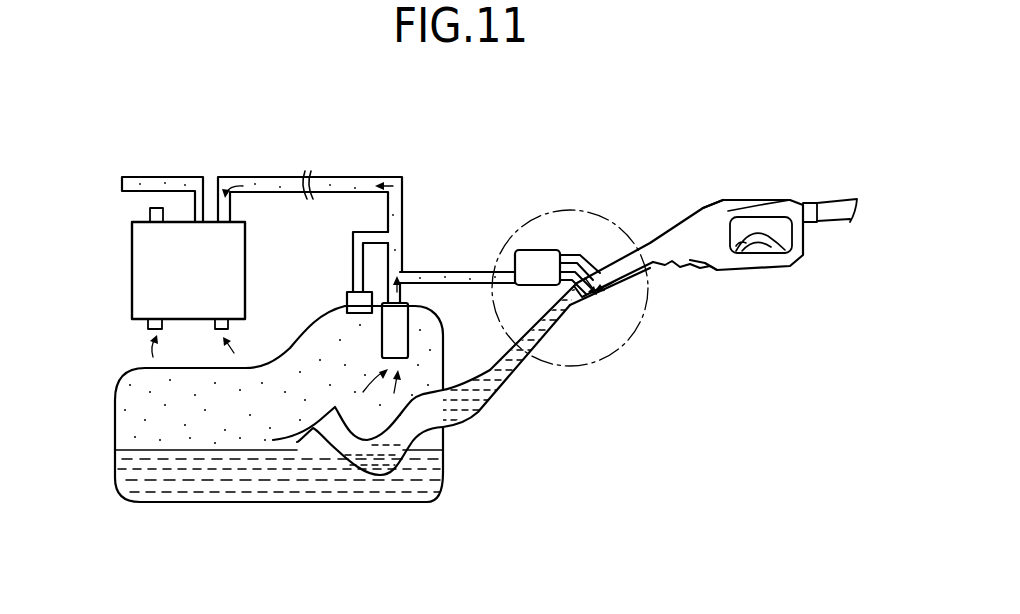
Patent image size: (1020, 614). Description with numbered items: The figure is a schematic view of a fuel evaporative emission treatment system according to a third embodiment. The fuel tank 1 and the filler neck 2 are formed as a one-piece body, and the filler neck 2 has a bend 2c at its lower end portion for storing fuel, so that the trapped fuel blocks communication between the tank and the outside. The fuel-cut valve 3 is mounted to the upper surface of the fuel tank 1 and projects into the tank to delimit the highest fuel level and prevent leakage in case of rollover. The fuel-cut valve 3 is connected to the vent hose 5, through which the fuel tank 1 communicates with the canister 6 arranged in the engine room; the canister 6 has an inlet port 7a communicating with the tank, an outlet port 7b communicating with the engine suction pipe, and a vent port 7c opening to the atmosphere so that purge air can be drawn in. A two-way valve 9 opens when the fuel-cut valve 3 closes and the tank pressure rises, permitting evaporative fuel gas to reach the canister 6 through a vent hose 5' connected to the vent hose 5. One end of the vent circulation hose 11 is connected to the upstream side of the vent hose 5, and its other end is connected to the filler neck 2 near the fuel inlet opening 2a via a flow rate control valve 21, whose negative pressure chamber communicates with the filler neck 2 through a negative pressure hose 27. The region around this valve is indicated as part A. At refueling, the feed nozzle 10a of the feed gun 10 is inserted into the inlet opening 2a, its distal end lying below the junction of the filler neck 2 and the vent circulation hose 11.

The fuel tank 1 is at (115, 415).
The filler neck 2 is at (527, 395).
The fuel inlet opening 2a is at (622, 260).
The bend 2c is at (380, 468).
The fuel-cut valve 3 is at (403, 350).
The vent hose 5 is at (316, 209).
The vent hose 5' is at (339, 259).
The canister 6 is at (132, 260).
The inlet port 7a is at (231, 212).
The outlet port 7b is at (197, 216).
The vent port 7c is at (148, 324).
The two-way valve 9 is at (347, 300).
The feed gun 10 is at (761, 192).
The feed nozzle 10a is at (608, 306).
The vent circulation hose 11 is at (453, 272).
The flow rate control valve 21 is at (535, 255).
The negative pressure hose 27 is at (572, 252).
The part A is at (630, 347).